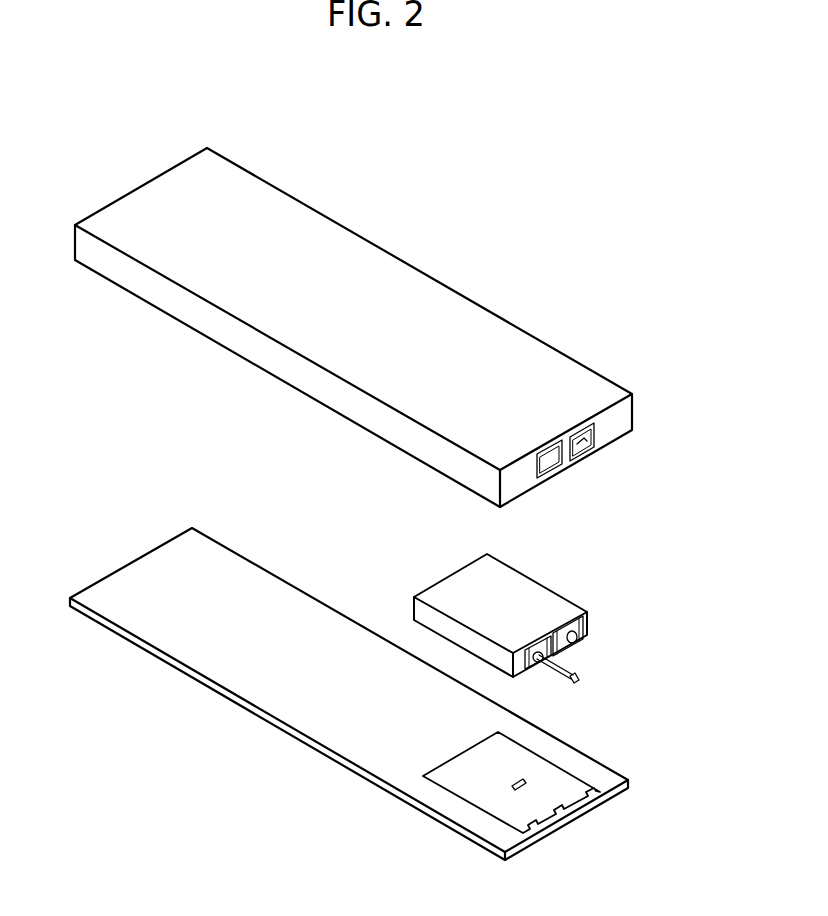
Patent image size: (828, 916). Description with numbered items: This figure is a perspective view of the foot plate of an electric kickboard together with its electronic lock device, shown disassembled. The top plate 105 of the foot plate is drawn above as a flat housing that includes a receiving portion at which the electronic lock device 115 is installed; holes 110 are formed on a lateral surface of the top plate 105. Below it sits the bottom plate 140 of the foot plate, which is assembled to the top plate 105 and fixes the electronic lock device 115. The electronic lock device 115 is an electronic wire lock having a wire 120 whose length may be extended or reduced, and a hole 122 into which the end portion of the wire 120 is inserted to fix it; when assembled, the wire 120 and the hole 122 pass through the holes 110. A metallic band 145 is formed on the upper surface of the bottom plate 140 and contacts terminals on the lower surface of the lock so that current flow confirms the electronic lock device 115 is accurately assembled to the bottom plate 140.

The top plate of the foot plate 105 is at (442, 308).
The holes 110 is at (582, 442).
The electronic lock device 115 is at (543, 593).
The wire 120 is at (575, 661).
The hole 122 is at (578, 643).
The bottom plate of the foot plate 140 is at (606, 796).
The metallic band 145 is at (512, 786).